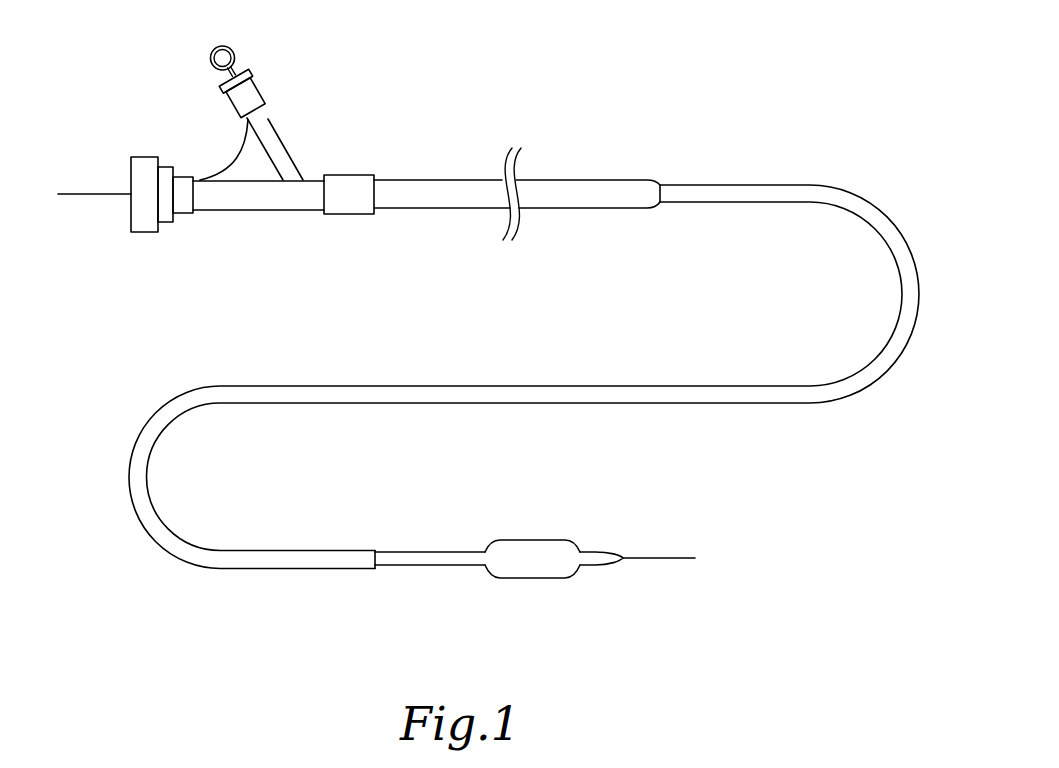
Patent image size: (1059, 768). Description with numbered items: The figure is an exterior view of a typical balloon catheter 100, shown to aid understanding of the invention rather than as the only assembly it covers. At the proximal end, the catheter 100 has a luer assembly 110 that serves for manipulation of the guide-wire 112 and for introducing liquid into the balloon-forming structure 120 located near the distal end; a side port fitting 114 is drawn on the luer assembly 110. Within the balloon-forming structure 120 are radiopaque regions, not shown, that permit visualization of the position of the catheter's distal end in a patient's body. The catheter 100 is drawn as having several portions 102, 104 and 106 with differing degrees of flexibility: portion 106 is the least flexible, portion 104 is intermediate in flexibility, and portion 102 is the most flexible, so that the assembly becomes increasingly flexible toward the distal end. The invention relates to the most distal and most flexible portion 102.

The balloon catheter 100 is at (752, 82).
The portion 102 is at (623, 585).
The portion 104 is at (513, 385).
The portion 106 is at (660, 130).
The luer assembly 110 is at (245, 211).
The guide-wire 112 is at (85, 195).
The side port valve / cap 114 is at (237, 65).
The balloon-forming structure 120 is at (533, 538).